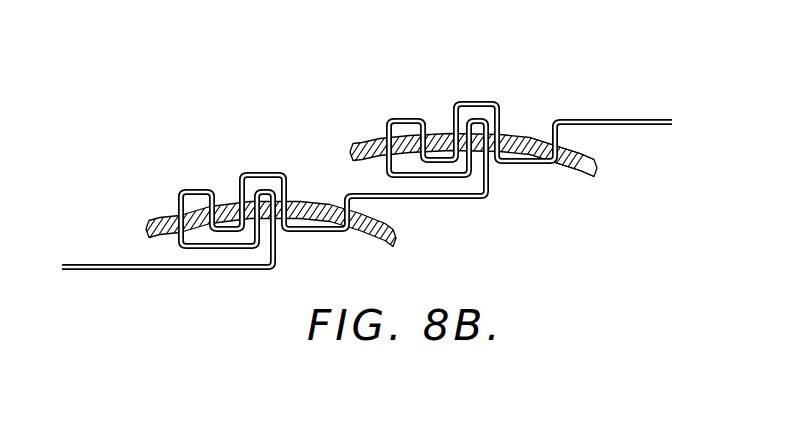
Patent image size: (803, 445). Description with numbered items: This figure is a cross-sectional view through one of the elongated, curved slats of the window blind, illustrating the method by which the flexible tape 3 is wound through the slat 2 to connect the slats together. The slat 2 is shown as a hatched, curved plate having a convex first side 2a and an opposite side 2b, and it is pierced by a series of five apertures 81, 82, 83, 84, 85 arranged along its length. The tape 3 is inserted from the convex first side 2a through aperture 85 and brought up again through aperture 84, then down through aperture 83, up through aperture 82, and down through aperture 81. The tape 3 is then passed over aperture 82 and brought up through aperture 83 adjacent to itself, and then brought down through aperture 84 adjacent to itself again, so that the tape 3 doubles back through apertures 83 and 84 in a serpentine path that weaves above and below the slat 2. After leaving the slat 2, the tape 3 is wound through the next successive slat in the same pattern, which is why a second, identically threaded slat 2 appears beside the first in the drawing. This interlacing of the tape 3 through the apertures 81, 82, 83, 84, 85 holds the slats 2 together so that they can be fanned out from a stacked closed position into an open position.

The slat 2 is at (598, 163).
The convex first side 2a is at (581, 156).
The lower surface of plate 2b is at (577, 173).
The flexible tape 3 is at (636, 121).
The aperture 81 is at (385, 139).
The aperture 82 is at (427, 129).
The aperture 83 is at (453, 112).
The aperture 84 is at (500, 133).
The aperture 85 is at (553, 142).